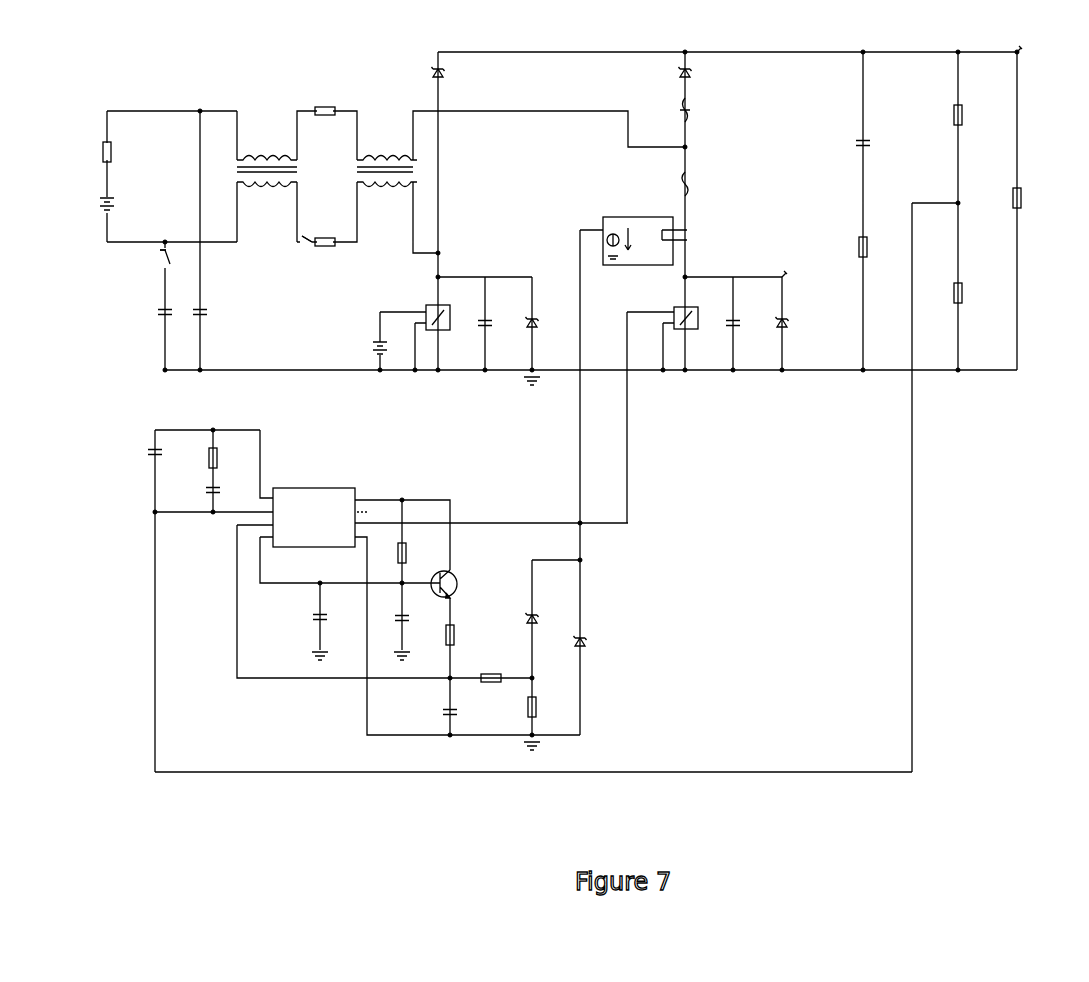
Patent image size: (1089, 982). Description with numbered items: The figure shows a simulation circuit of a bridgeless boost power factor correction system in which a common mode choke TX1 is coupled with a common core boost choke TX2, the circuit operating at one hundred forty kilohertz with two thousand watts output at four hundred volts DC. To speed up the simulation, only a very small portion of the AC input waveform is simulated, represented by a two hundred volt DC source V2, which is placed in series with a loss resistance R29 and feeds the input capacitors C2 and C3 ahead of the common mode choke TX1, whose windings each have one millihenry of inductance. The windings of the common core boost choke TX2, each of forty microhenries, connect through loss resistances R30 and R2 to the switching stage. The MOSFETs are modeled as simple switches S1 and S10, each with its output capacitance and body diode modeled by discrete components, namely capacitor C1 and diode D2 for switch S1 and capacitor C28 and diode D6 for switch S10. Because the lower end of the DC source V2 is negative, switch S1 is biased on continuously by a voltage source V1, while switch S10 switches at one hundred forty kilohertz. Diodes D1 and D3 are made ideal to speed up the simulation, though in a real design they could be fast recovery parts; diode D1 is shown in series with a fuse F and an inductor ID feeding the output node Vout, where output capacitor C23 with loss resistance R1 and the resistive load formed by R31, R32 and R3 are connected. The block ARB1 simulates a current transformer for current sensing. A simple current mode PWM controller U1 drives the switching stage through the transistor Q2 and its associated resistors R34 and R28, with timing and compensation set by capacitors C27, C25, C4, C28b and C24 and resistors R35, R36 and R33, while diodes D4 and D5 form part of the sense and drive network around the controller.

The loss resistance R29 is at (118, 149).
The DC source V2 is at (120, 200).
The capacitor C2 100n C2 is at (133, 316).
The capacitor C3 100n C3 is at (237, 316).
The common mode choke TX1 is at (267, 180).
The common core boost choke TX2 is at (387, 180).
The loss resistance R30 is at (327, 111).
The loss resistance R2 is at (327, 242).
The diode D3 is at (456, 78).
The diode D1 is at (703, 78).
The fuse F is at (681, 110).
The inductor ID is at (693, 184).
The current transformer model ARB1 is at (638, 222).
The switch S1 is at (443, 316).
The voltage source V1 is at (367, 343).
The capacitor C1 300p C1 is at (500, 328).
The ideal diode D2 is at (549, 349).
The switch S10 is at (692, 315).
The capacitor C28 300p C28 is at (748, 328).
The ideal diode D6 is at (800, 328).
The capacitor C23 20u C23 is at (827, 151).
The loss resistance R1 is at (849, 246).
The resistor R31 159k R31 is at (941, 113).
The resistor R32 1K R32 is at (945, 292).
The resistor R3 80 R3 is at (1030, 188).
The output node Vout is at (1036, 48).
The capacitor C27 100p C27 is at (114, 459).
The resistor R35 20k R35 is at (199, 459).
The capacitor C25 5n C25 is at (180, 495).
The current mode PWM controller U1 is at (314, 510).
The capacitor C4 120p C4 is at (284, 634).
The capacitor C28 1n C28b is at (372, 634).
The resistor R34 10k R34 is at (414, 552).
The transistor Q2 Q2N2222 Q2 is at (467, 587).
The resistor R28 3k R28 is at (462, 635).
The resistor R36 1K R36 is at (491, 678).
The capacitor C24 100p C24 is at (432, 718).
The ideal diode D4 is at (512, 625).
The ideal diode D5 is at (561, 647).
The resistor R33 1.8 R33 is at (543, 721).